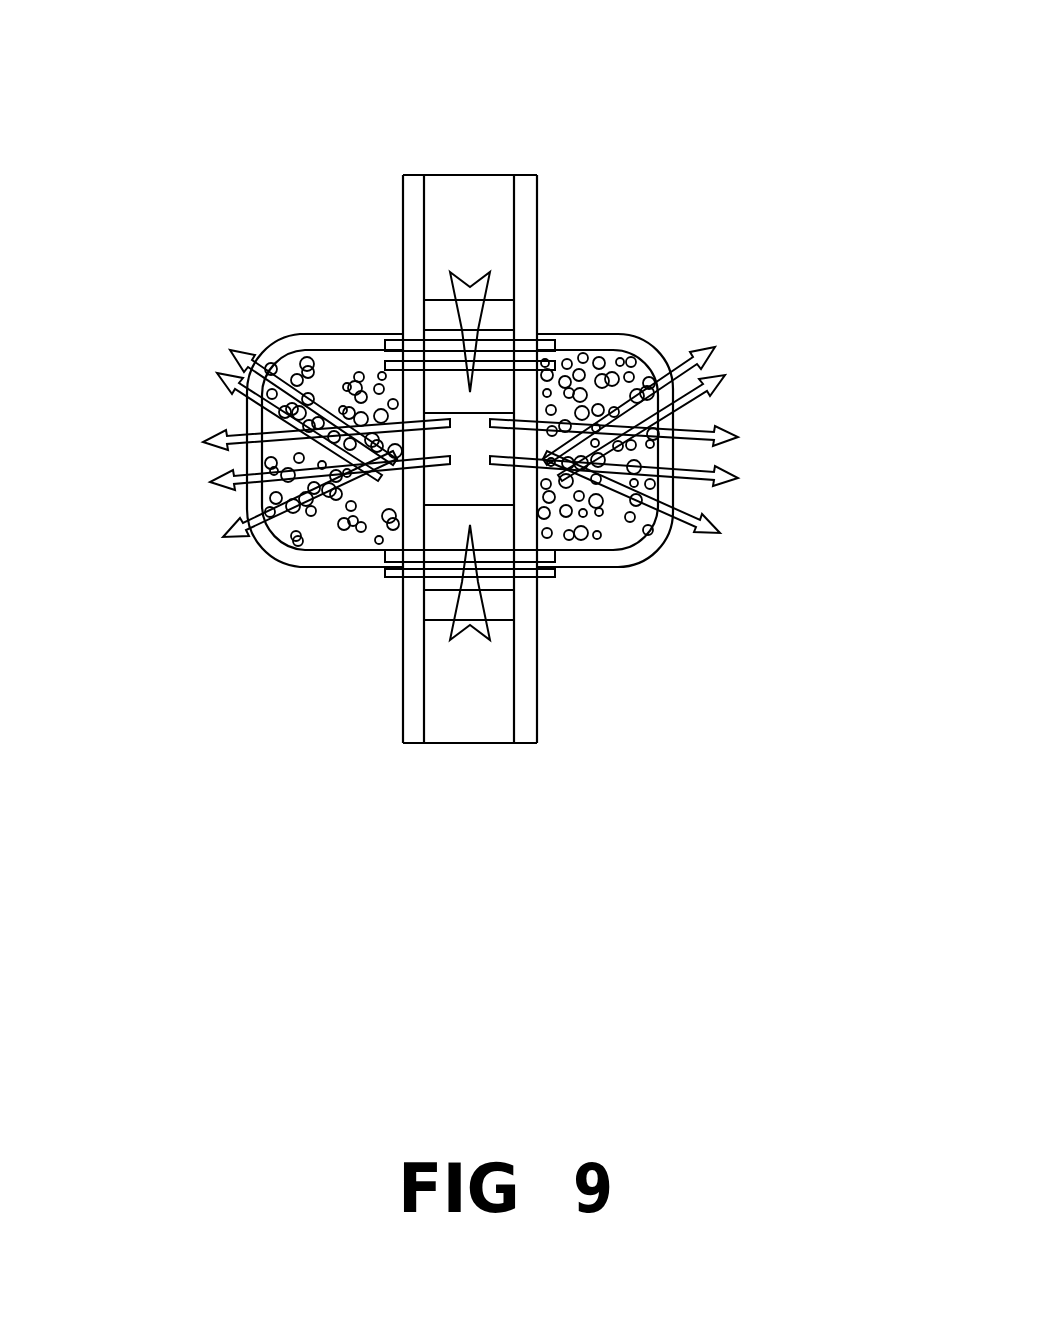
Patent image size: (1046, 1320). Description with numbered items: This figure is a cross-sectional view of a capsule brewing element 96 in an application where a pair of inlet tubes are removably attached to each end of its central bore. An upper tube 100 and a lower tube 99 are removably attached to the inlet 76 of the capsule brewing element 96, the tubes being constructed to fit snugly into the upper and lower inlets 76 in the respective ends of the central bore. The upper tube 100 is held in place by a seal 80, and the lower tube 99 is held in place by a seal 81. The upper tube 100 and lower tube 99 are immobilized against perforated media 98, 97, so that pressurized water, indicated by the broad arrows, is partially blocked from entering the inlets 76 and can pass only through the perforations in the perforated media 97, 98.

The inlet 76 is at (468, 473).
The seal 80 is at (537, 342).
The seal 81 is at (540, 572).
The capsule brewing element 96 is at (333, 310).
The perforated media 97 is at (435, 570).
The perforated media 98 is at (435, 340).
The lower tube 99 is at (540, 697).
The upper tube 100 is at (538, 277).